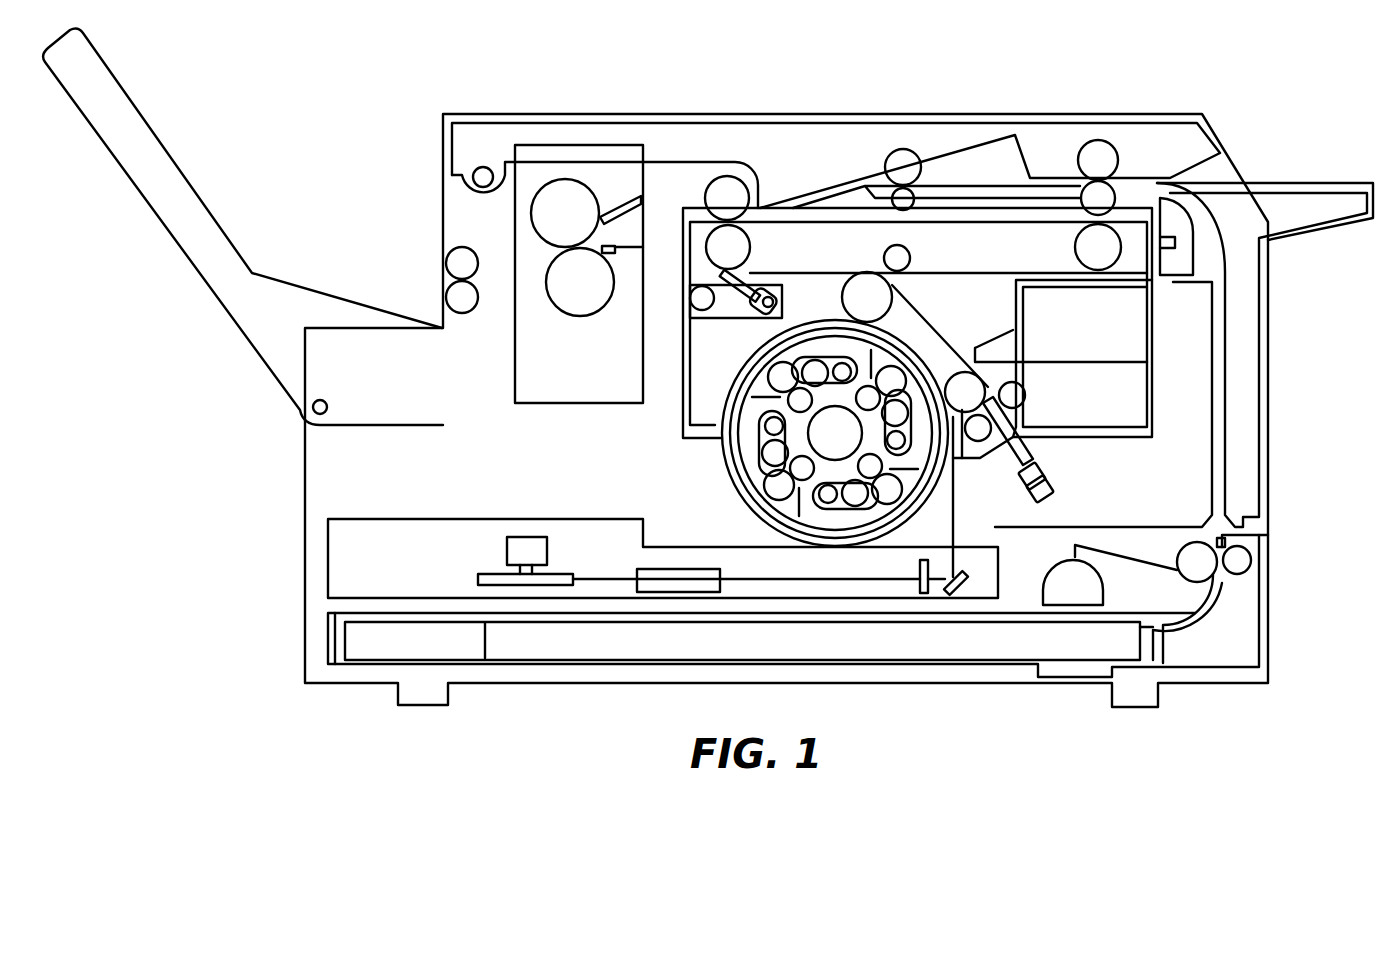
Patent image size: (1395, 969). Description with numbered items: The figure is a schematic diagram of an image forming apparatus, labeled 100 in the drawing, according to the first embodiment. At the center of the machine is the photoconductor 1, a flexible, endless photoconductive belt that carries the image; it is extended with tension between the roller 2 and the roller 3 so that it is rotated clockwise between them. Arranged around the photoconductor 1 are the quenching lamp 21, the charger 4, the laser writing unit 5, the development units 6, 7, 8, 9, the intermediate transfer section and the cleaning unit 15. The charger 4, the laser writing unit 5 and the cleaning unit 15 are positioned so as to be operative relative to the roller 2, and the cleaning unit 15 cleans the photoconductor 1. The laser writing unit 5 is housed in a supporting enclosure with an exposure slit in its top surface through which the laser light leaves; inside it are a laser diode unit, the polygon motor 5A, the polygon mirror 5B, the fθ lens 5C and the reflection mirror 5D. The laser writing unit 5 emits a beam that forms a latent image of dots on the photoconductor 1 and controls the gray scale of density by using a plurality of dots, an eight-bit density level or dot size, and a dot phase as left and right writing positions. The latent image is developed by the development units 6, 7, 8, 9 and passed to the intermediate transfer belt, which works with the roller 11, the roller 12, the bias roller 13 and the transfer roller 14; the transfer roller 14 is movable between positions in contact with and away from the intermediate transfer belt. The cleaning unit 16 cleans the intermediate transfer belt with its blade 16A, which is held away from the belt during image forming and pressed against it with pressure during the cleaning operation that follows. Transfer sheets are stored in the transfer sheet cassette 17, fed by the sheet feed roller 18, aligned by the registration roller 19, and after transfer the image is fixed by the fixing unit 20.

The image forming apparatus 100 is at (270, 608).
The photoconductor 1 is at (920, 323).
The roller 2 is at (970, 366).
The roller 3 is at (888, 289).
The charger 4 is at (974, 460).
The laser writing unit 5 is at (760, 600).
The polygon motor 5A is at (530, 537).
The polygon mirror 5B is at (560, 575).
The fθ lens 5C is at (660, 569).
The reflection mirror 5D is at (960, 595).
The development unit 6 is at (912, 470).
The development unit 7 is at (823, 515).
The development unit 8 is at (758, 448).
The development unit 9 is at (840, 345).
The roller 11 is at (752, 247).
The roller 12 is at (1075, 248).
The bias roller 13 is at (910, 256).
The transfer roller 14 is at (712, 182).
The cleaning unit 15 is at (1030, 413).
The cleaning unit 16 is at (695, 405).
The blade 16A is at (737, 297).
The transfer sheet cassette 17 is at (995, 667).
The sheet feed roller 18 is at (1100, 588).
The registration roller 19 is at (887, 160).
The fixing unit 20 is at (578, 145).
The quenching lamp 21 is at (1046, 470).